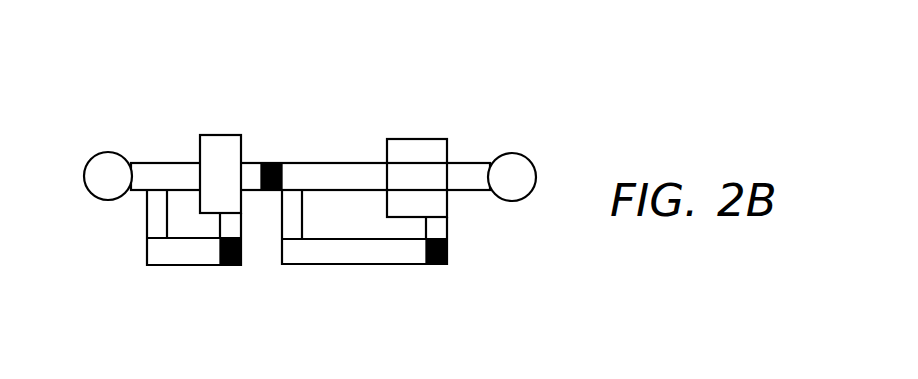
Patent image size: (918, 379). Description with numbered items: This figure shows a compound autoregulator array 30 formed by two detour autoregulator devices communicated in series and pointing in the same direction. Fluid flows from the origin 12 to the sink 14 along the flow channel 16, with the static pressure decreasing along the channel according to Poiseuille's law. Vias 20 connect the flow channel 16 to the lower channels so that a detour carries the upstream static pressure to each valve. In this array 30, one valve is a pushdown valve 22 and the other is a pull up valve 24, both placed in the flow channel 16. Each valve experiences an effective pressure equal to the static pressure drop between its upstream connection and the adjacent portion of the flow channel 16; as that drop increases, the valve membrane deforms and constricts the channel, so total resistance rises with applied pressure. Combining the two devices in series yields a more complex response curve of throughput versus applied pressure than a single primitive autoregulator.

The origin 12 is at (108, 152).
The sink 14 is at (527, 156).
The flow channel 16 is at (163, 162).
The via 20 is at (263, 190).
The pushdown valve 22 is at (227, 140).
The pull up valve 24 is at (422, 145).
The array 30 is at (598, 136).